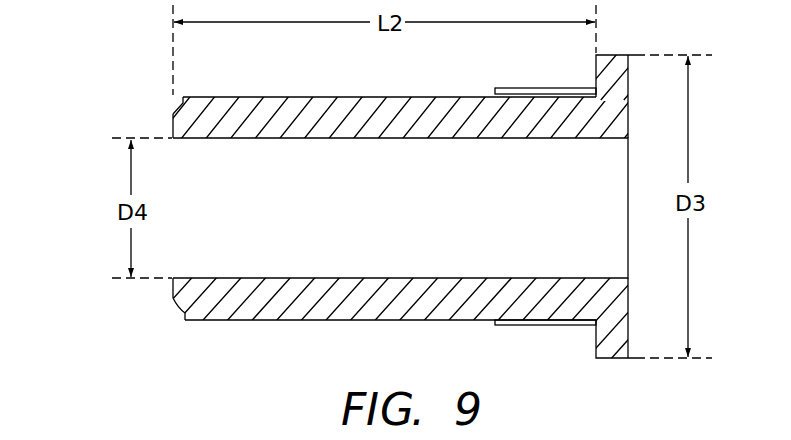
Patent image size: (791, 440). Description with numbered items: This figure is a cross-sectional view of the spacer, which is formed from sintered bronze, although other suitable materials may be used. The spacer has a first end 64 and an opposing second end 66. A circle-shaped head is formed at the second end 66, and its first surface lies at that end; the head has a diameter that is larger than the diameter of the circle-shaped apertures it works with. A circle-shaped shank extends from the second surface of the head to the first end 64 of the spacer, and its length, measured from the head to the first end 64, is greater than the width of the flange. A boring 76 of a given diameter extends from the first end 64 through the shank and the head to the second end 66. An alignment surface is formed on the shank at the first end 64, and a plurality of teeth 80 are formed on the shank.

The first end 64 is at (173, 298).
The second end 66 is at (627, 358).
The boring 76 is at (222, 165).
The teeth 80 is at (597, 92).